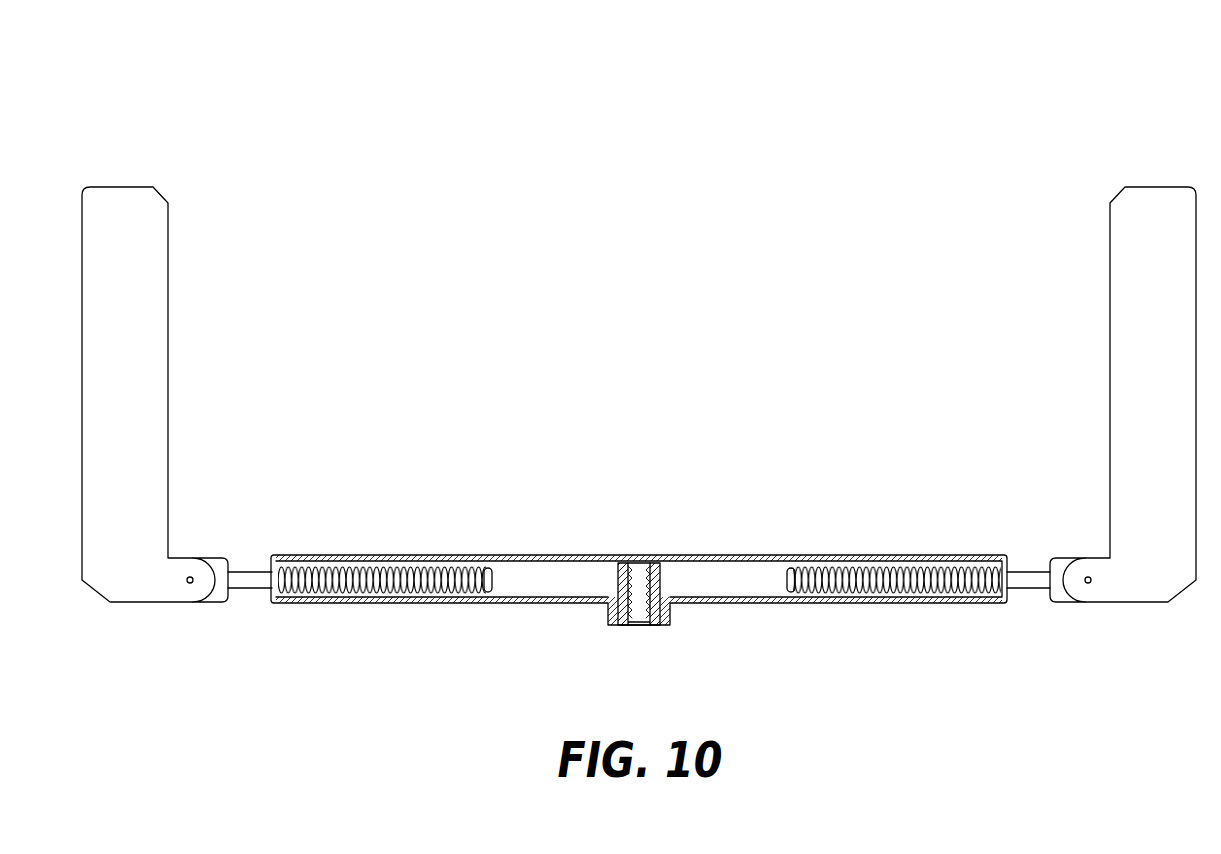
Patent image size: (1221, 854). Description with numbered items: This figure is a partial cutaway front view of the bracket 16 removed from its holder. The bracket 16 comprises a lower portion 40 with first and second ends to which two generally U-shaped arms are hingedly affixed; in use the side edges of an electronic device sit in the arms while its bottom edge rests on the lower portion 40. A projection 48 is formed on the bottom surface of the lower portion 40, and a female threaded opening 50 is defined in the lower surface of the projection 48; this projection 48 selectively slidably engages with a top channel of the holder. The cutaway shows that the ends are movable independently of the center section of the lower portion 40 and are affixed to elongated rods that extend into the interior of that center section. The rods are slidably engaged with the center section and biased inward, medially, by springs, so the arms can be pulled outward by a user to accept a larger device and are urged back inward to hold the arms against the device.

The bracket 16 is at (256, 80).
The lower portion 40 is at (667, 557).
The projection 48 is at (655, 628).
The female threaded opening 50 is at (634, 615).